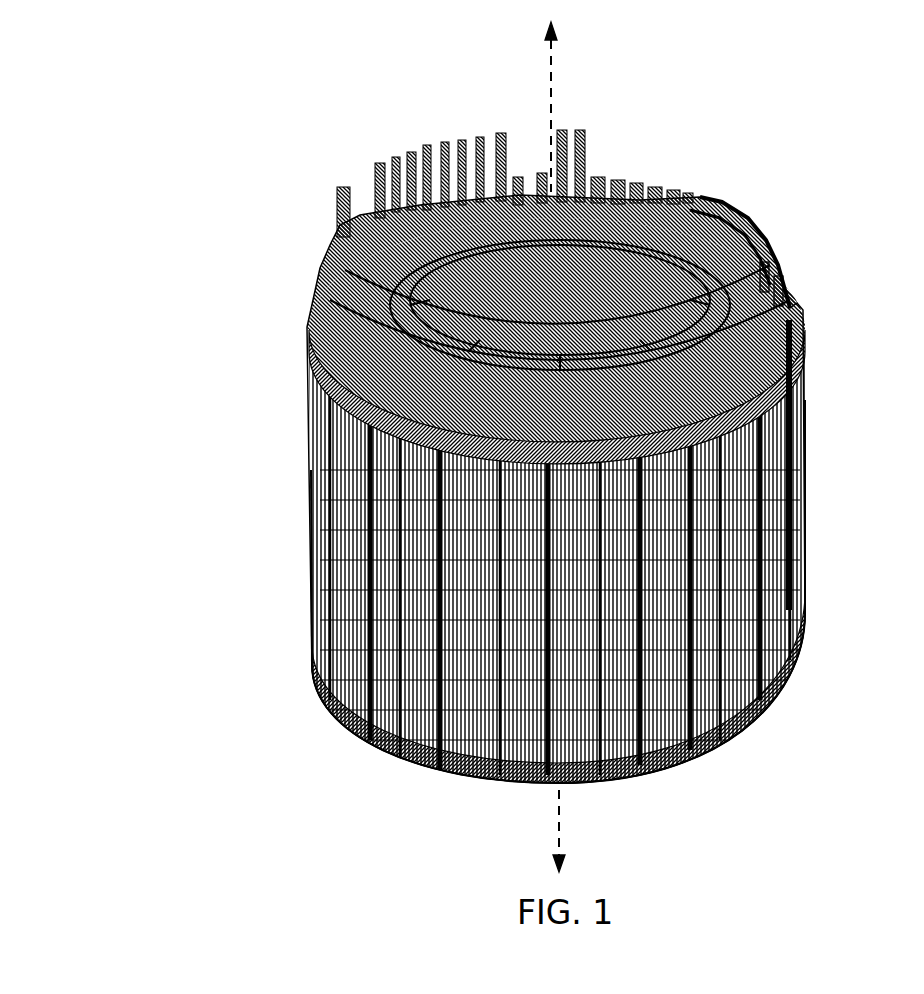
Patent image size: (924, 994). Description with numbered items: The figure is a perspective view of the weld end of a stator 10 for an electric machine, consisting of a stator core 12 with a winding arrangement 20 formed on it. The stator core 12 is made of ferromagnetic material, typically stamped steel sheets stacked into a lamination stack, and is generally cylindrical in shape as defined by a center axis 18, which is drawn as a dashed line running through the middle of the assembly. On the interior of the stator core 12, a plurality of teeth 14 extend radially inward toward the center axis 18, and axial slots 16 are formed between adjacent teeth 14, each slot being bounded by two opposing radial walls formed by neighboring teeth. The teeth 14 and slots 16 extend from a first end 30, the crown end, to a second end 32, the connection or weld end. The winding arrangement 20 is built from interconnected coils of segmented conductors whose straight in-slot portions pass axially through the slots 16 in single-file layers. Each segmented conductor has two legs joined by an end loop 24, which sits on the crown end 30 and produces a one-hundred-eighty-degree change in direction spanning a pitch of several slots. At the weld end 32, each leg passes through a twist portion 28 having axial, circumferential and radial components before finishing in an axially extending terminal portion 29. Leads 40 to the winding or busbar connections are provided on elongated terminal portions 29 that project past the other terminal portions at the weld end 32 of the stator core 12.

The stator 10 is at (254, 160).
The stator core 12 is at (312, 603).
The teeth 14 is at (590, 280).
The slots 16 is at (615, 282).
The center axis 18 is at (630, 447).
The winding arrangement 20 is at (770, 228).
The end loop 24 is at (335, 342).
The twist portion 28 is at (800, 430).
The terminal portion 29 is at (865, 273).
The first end 30 is at (320, 742).
The second end 32 is at (303, 318).
The leads 40 is at (427, 145).